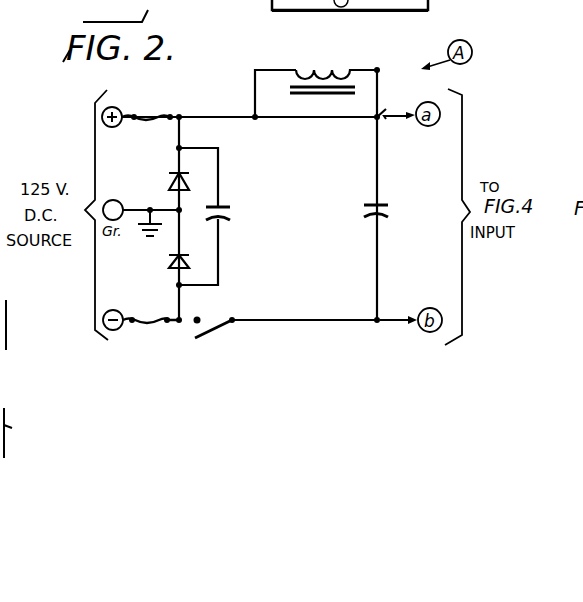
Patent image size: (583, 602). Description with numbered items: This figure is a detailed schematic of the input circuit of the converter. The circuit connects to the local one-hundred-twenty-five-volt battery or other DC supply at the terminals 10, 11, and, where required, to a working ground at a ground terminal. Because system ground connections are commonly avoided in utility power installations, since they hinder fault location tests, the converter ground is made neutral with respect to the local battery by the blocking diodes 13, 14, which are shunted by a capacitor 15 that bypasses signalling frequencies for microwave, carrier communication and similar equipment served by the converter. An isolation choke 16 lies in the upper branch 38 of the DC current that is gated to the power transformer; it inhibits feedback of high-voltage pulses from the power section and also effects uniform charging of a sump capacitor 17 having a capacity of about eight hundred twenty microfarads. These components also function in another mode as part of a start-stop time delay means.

The terminal 10 is at (118, 108).
The terminal 11 is at (120, 306).
The blocking diode 13 is at (170, 182).
The blocking diode 14 is at (169, 262).
The capacitor 15 is at (243, 214).
The isolation choke 16 is at (319, 70).
The sump capacitor 17 is at (358, 212).
The upper branch 38 is at (386, 110).